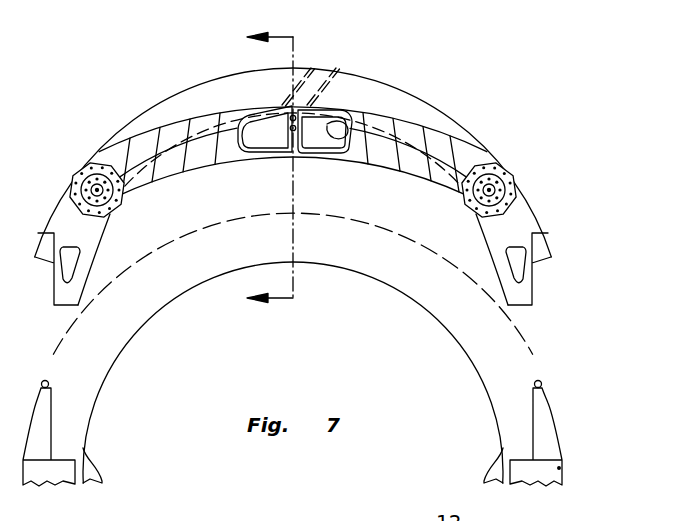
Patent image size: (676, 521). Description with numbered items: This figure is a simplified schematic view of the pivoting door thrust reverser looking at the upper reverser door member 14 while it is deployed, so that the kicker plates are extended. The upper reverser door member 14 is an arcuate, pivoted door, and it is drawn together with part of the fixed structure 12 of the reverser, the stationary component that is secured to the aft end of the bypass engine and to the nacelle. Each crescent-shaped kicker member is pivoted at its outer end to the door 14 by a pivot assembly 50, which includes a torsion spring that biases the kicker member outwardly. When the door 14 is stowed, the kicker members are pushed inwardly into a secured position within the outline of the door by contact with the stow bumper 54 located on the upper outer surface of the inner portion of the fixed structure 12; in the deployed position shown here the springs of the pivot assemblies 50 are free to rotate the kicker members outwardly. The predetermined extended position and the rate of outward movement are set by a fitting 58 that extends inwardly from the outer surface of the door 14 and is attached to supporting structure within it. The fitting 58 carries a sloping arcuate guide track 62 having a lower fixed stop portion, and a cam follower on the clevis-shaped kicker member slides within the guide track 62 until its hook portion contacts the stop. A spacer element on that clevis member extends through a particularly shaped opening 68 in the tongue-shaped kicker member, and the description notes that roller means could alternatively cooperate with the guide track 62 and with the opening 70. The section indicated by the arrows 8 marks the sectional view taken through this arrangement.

The fixed structure 12 is at (559, 433).
The upper reverser door member 14 is at (380, 81).
The pivot assembly 50 is at (82, 170).
The stow bumper 54 is at (283, 260).
The fitting 58 is at (272, 84).
The sloping arcuate guide track 62 is at (322, 82).
The opening 68 is at (320, 133).
The opening 70 is at (343, 127).
The section line 8- 8 is at (260, 168).